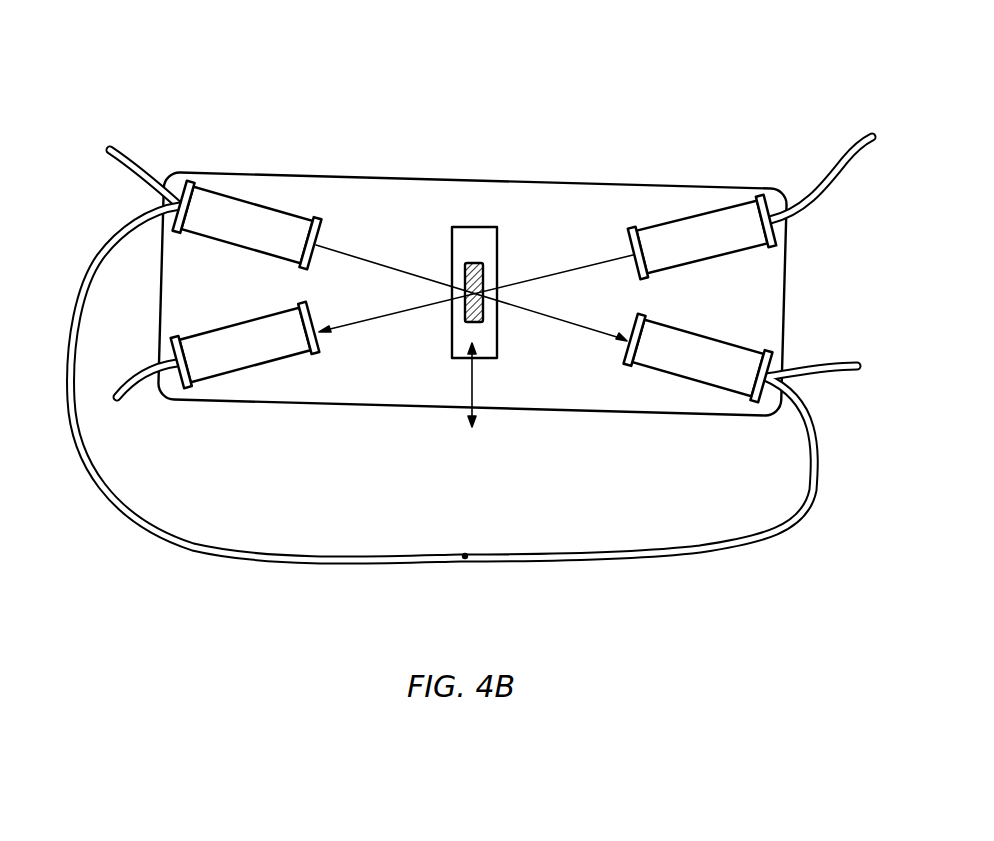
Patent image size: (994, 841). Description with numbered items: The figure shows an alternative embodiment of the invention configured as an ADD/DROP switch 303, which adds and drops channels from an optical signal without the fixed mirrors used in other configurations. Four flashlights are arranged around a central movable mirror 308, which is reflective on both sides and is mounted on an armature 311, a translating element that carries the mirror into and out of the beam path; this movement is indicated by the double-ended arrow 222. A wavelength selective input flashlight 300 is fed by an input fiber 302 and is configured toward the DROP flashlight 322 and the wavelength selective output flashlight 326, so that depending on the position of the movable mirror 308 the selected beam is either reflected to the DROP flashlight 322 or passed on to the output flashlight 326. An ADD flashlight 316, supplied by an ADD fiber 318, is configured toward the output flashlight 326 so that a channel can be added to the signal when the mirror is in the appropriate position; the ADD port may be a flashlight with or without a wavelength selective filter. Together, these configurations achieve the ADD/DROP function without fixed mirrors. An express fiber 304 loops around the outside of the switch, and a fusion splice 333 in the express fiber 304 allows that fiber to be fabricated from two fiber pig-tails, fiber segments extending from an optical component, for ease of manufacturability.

The ADD/DROP switch 303 is at (690, 70).
The input fiber 302 is at (134, 165).
The wavelength selective input flashlight 300 is at (224, 190).
The movable mirror 308 is at (477, 263).
The armature 311 is at (490, 226).
The ADD flashlight 316 is at (734, 207).
The ADD fiber 318 is at (856, 151).
The DROP flashlight 322 is at (211, 385).
The wavelength selective output flashlight 326 is at (718, 396).
The double-ended arrow 222 is at (477, 413).
The express fiber 304 is at (175, 531).
The fusion splice 333 is at (466, 560).